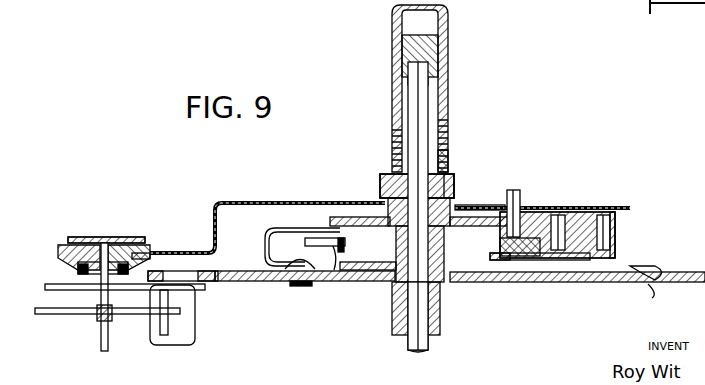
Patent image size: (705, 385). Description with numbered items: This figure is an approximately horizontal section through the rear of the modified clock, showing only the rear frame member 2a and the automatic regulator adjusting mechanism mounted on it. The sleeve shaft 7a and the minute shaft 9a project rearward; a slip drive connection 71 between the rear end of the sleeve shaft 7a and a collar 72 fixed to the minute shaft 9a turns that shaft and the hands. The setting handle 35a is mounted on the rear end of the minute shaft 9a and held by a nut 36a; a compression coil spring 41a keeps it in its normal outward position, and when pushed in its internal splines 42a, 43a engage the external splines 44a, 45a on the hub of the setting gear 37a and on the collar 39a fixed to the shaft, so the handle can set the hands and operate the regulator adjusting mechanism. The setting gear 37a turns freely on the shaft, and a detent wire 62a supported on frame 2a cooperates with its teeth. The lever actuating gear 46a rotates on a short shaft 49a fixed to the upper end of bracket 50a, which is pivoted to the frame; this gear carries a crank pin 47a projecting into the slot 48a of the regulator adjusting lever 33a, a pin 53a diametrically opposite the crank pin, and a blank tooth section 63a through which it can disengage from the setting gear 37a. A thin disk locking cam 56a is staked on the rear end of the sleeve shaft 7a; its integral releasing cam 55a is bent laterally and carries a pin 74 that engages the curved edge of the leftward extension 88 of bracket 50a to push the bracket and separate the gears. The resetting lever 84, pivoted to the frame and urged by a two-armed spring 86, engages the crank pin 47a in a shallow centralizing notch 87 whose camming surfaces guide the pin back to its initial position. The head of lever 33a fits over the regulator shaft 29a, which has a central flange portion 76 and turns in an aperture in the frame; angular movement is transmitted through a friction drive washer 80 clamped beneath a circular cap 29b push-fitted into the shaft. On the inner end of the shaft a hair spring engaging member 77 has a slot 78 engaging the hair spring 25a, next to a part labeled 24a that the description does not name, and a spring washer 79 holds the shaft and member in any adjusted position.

The rear frame member 2a is at (250, 282).
The sleeve shaft 7a is at (440, 330).
The minute shaft 9a is at (410, 104).
The rod 24a is at (100, 334).
The hair spring 25a is at (58, 314).
The regulator shaft 29a is at (100, 237).
The circular cap 29b is at (112, 237).
The regulator adjusting lever 33a is at (270, 203).
The setting handle 35a is at (448, 56).
The nut 36a is at (402, 56).
The setting gear 37a is at (340, 216).
The collar 39a is at (392, 190).
The compression coil spring 41a is at (440, 132).
The internal spline 42a is at (392, 174).
The internal spline 43a is at (392, 158).
The external spline 44a is at (454, 190).
The external spline 45a is at (448, 172).
The lever actuating gear 46a is at (590, 212).
The crank pin 47a is at (512, 190).
The slot 48a is at (580, 212).
The short shaft 49a is at (556, 215).
The bracket 50a is at (590, 258).
The pin 53a is at (610, 240).
The releasing cam 55a is at (306, 244).
The locking cam 56a is at (334, 270).
The detent wire 62a is at (300, 230).
The blank tooth section 63a is at (615, 218).
The slip drive connection 71 is at (445, 249).
The collar 72 is at (396, 252).
The pin 74 is at (320, 268).
The central flange portion 76 is at (64, 256).
The hair spring engaging member 77 is at (52, 288).
The slot 78 is at (190, 310).
The spring washer 79 is at (78, 268).
The friction drive washer 80 is at (156, 246).
The resetting lever 84 is at (514, 210).
The two-armed spring 86 is at (654, 268).
The centralizing notch 87 is at (506, 205).
The leftward extension 88 is at (502, 254).